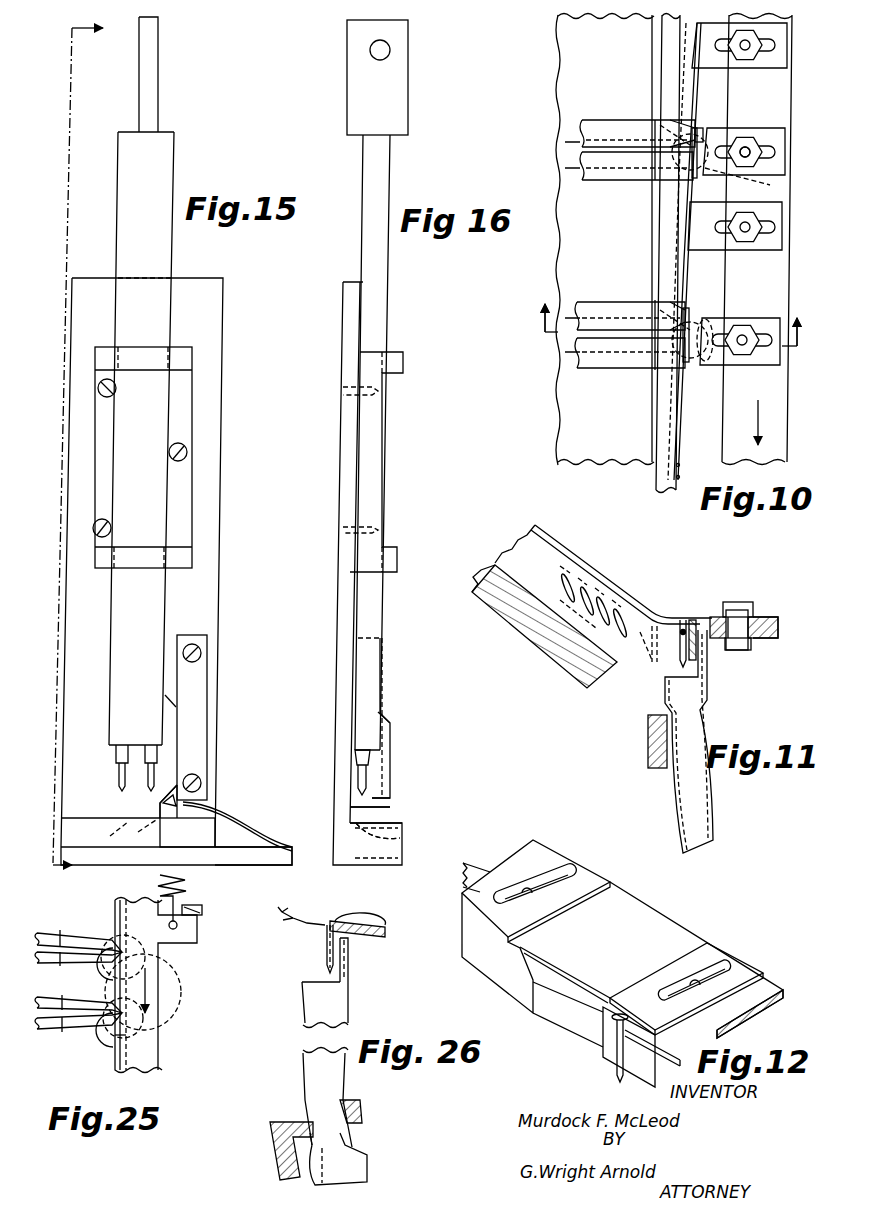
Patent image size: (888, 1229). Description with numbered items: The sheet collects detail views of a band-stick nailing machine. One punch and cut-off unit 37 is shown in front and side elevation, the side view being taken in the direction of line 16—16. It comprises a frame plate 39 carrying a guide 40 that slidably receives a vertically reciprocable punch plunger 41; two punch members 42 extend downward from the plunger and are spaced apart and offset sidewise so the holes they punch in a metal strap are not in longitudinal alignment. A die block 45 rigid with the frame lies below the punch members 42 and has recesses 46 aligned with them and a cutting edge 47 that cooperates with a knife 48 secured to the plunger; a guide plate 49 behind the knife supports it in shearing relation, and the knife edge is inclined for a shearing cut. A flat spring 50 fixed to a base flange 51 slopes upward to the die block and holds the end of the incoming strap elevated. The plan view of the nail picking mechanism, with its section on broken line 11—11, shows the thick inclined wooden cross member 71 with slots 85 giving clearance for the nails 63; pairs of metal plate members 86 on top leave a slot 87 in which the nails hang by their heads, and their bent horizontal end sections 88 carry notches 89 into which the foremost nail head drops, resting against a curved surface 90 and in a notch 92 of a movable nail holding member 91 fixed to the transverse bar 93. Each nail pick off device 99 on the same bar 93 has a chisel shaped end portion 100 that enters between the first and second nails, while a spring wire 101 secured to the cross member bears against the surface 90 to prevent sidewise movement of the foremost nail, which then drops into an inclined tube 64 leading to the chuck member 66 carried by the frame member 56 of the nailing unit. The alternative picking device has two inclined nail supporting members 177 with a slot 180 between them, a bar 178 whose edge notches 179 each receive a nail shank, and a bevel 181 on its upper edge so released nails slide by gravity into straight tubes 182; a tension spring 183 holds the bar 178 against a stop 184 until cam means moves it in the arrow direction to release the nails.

In FIG. 15, the line 16— 16 is at (73, 449).
In FIG. 10, the broken line 11— 11 is at (674, 324).
In FIG. 15, the punch and cut-off unit 37 is at (230, 712).
In FIG. 16, the punch and cut-off unit 37 is at (398, 702).
In FIG. 15, the frame plate 39 is at (213, 408).
In FIG. 16, the frame plate 39 is at (348, 473).
In FIG. 15, the guide 40 is at (182, 355).
In FIG. 16, the guide 40 is at (400, 359).
In FIG. 15, the punch plunger 41 is at (163, 270).
In FIG. 16, the punch plunger 41 is at (375, 313).
In FIG. 15, the punch members 42 is at (122, 773).
In FIG. 16, the punch members 42 is at (362, 776).
In FIG. 15, the die block 45 is at (76, 826).
In FIG. 16, the die block 45 is at (400, 820).
In FIG. 15, the recesses 46 is at (124, 838).
In FIG. 16, the recesses 46 is at (403, 840).
In FIG. 15, the cutting edge 47 is at (167, 819).
In FIG. 15, the knife 48 is at (172, 779).
In FIG. 16, the knife 48 is at (373, 808).
In FIG. 15, the guide plate 49 is at (197, 675).
In FIG. 16, the guide plate 49 is at (385, 663).
In FIG. 15, the flat spring 50 is at (230, 820).
In FIG. 15, the base flange 51 is at (258, 851).
In FIG. 26, the frame member 56 is at (274, 1128).
In FIG. 10, the nails 63 is at (687, 317).
In FIG. 11, the nails 63 is at (570, 592).
In FIG. 12, the nails 63 is at (617, 1060).
In FIG. 26, the nails 63 is at (327, 953).
In FIG. 10, the inclined tubes 64 is at (766, 181).
In FIG. 11, the inclined tubes 64 is at (692, 724).
In FIG. 26, the nail holding chuck member 66 is at (347, 1167).
In FIG. 10, the inclined cross member 71 is at (566, 433).
In FIG. 11, the inclined cross member 71 is at (560, 648).
In FIG. 10, the slots 85 is at (562, 143).
In FIG. 11, the slots 85 is at (525, 558).
In FIG. 10, the metal plate members 86 is at (620, 149).
In FIG. 11, the metal plate members 86 is at (558, 549).
In FIG. 10, the slot 87 is at (592, 147).
In FIG. 10, the end sections 88 is at (668, 143).
In FIG. 11, the end sections 88 is at (675, 613).
In FIG. 10, the notches 89 is at (667, 127).
In FIG. 11, the notches 89 is at (693, 613).
In FIG. 10, the curved surface 90 is at (699, 127).
In FIG. 12, the curved surface 90 is at (605, 1041).
In FIG. 10, the nail holding member 91 is at (772, 140).
In FIG. 11, the nail holding member 91 is at (772, 614).
In FIG. 12, the nail holding member 91 is at (653, 980).
In FIG. 10, the notch 92 is at (717, 140).
In FIG. 11, the notch 92 is at (722, 612).
In FIG. 12, the notch 92 is at (613, 1013).
In FIG. 10, the transverse bar 93 is at (770, 424).
In FIG. 11, the transverse bar 93 is at (760, 640).
In FIG. 12, the transverse bar 93 is at (640, 915).
In FIG. 10, the nail pick off device 99 is at (774, 60).
In FIG. 12, the nail pick off device 99 is at (490, 975).
In FIG. 10, the chisel shaped end portion 100 is at (690, 91).
In FIG. 12, the chisel shaped end portion 100 is at (570, 1003).
In FIG. 10, the spring wire 101 is at (697, 193).
In FIG. 11, the spring wire 101 is at (680, 634).
In FIG. 12, the spring wire 101 is at (630, 1077).
In FIG. 25, the nail supporting members 177 is at (52, 935).
In FIG. 26, the nail supporting members 177 is at (289, 927).
In FIG. 25, the bar 178 is at (133, 1050).
In FIG. 26, the bar 178 is at (372, 937).
In FIG. 25, the notches 179 is at (108, 968).
In FIG. 26, the notches 179 is at (343, 952).
In FIG. 25, the slot 180 is at (78, 945).
In FIG. 25, the bevel 181 is at (118, 1035).
In FIG. 26, the bevel 181 is at (386, 931).
In FIG. 25, the tubes 182 is at (157, 1009).
In FIG. 26, the tubes 182 is at (310, 1037).
In FIG. 25, the tension spring 183 is at (183, 892).
In FIG. 25, the stop 184 is at (195, 915).